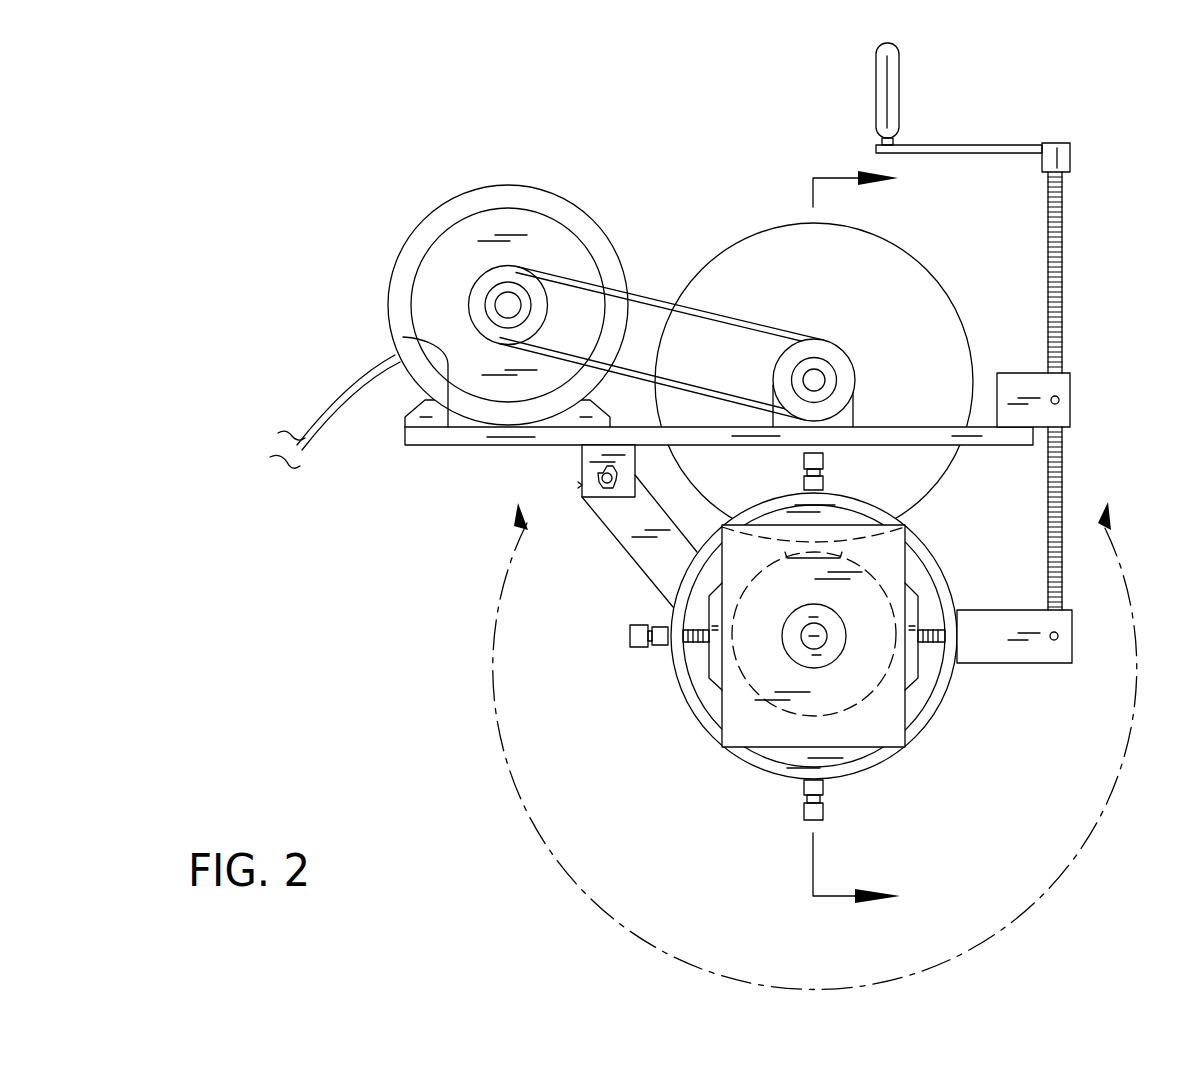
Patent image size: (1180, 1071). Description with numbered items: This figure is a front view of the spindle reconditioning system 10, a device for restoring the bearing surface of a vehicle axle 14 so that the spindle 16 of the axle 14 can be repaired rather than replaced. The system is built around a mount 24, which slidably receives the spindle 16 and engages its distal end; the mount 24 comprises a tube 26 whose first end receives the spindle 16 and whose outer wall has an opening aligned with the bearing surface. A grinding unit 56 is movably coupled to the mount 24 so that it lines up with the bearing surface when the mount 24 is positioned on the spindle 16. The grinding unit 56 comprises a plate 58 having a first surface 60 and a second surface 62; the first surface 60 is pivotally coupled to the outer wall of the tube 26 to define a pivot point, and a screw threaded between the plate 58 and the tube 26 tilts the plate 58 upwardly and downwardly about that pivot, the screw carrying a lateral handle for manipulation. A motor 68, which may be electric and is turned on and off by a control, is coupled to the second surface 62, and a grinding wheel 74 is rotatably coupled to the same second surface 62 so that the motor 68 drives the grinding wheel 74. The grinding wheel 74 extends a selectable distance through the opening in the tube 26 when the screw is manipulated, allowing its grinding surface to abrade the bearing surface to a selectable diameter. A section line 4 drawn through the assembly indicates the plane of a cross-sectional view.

The spindle reconditioning system 10 is at (608, 130).
The axle 14 is at (874, 690).
The spindle 16 is at (875, 583).
The mount 24 is at (640, 704).
The tube 26 is at (710, 737).
The grinding unit 56 is at (694, 210).
The plate 58 is at (403, 445).
The first surface 60 is at (477, 445).
The second surface 62 is at (403, 337).
The motor 68 is at (512, 183).
The grinding wheel 74 is at (762, 230).
The section line 4- 4 is at (865, 537).